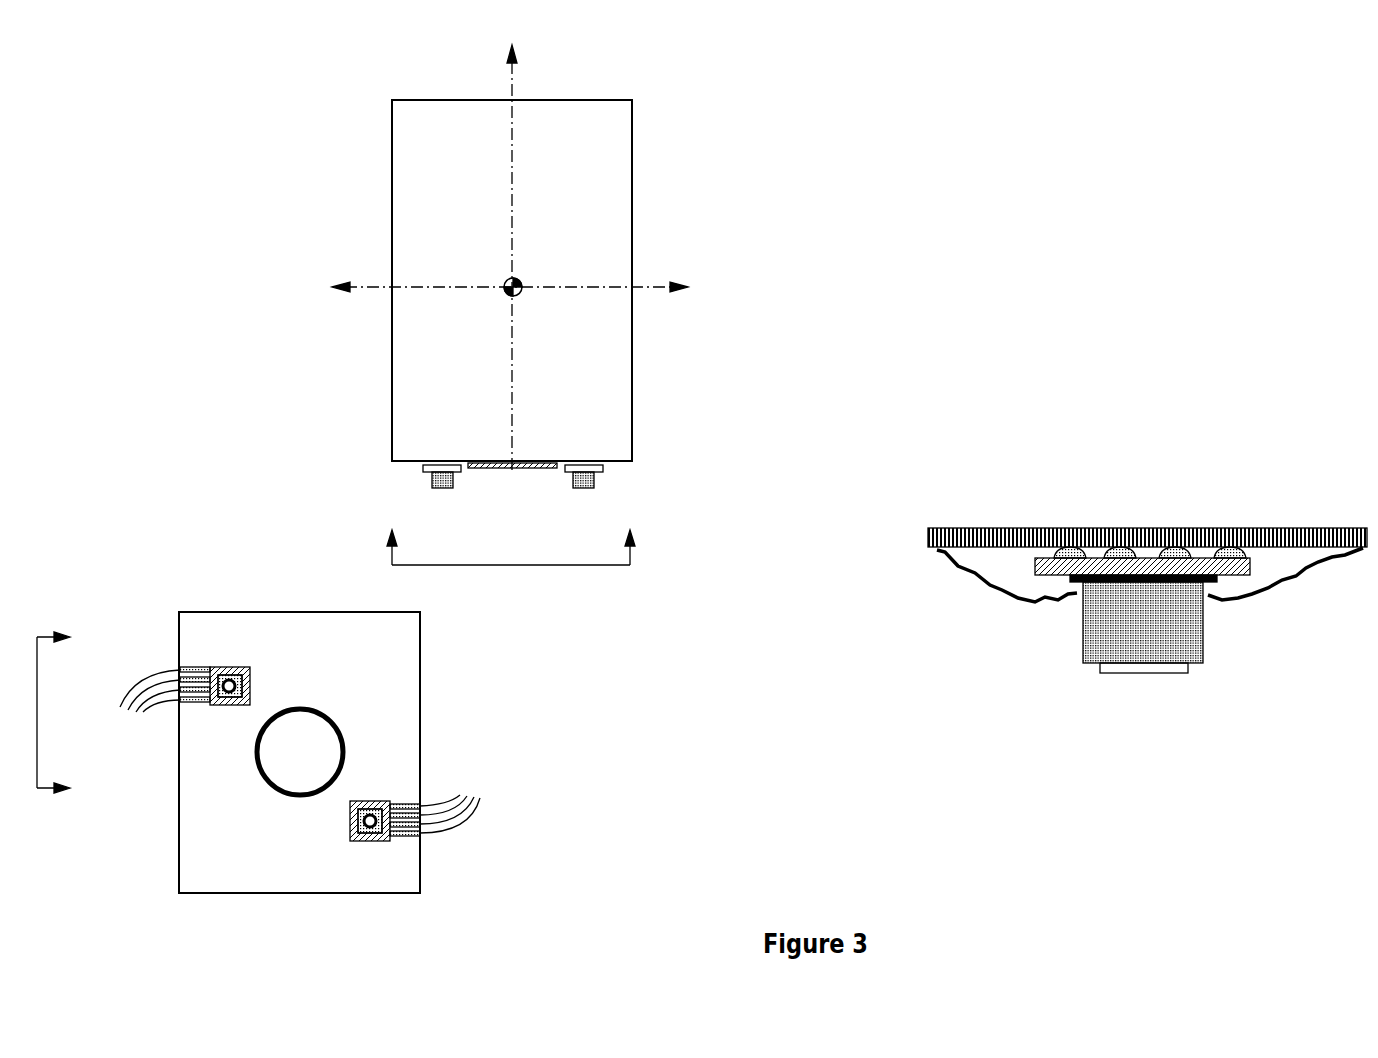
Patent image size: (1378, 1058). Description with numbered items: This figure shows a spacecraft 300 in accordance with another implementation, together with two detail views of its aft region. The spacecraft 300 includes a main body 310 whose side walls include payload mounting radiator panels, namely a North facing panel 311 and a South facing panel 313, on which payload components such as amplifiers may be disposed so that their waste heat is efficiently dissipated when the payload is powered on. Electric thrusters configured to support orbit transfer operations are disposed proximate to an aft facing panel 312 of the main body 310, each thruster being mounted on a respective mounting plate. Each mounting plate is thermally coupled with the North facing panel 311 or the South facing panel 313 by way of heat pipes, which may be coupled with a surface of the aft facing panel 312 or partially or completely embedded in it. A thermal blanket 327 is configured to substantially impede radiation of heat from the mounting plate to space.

The spacecraft 300 is at (303, 74).
The main body 310 is at (621, 233).
The North facing panel 311 is at (398, 371).
The aft facing panel 312 is at (612, 460).
The South facing panel 313 is at (422, 641).
The thermal blanket 327 is at (998, 597).